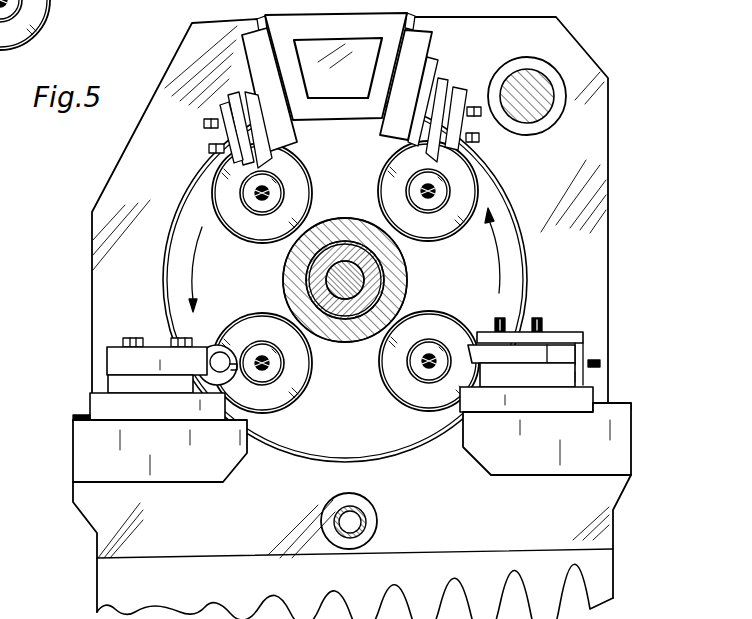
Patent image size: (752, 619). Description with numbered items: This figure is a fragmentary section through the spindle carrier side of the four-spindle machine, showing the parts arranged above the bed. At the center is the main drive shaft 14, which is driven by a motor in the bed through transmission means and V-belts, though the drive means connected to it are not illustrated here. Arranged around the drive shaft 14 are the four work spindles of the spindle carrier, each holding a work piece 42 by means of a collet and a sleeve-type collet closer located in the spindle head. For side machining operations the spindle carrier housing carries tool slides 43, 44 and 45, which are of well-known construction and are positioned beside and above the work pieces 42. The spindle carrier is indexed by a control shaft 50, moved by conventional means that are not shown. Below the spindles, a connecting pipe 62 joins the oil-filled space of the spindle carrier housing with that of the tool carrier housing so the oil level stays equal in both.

The main drive shaft 14 is at (340, 276).
The work piece 42 is at (260, 192).
The tool slide 43 is at (533, 348).
The tool slide 44 is at (152, 357).
The tool slide 45 is at (225, 125).
The control shaft 50 is at (528, 78).
The connecting pipe 62 is at (362, 512).